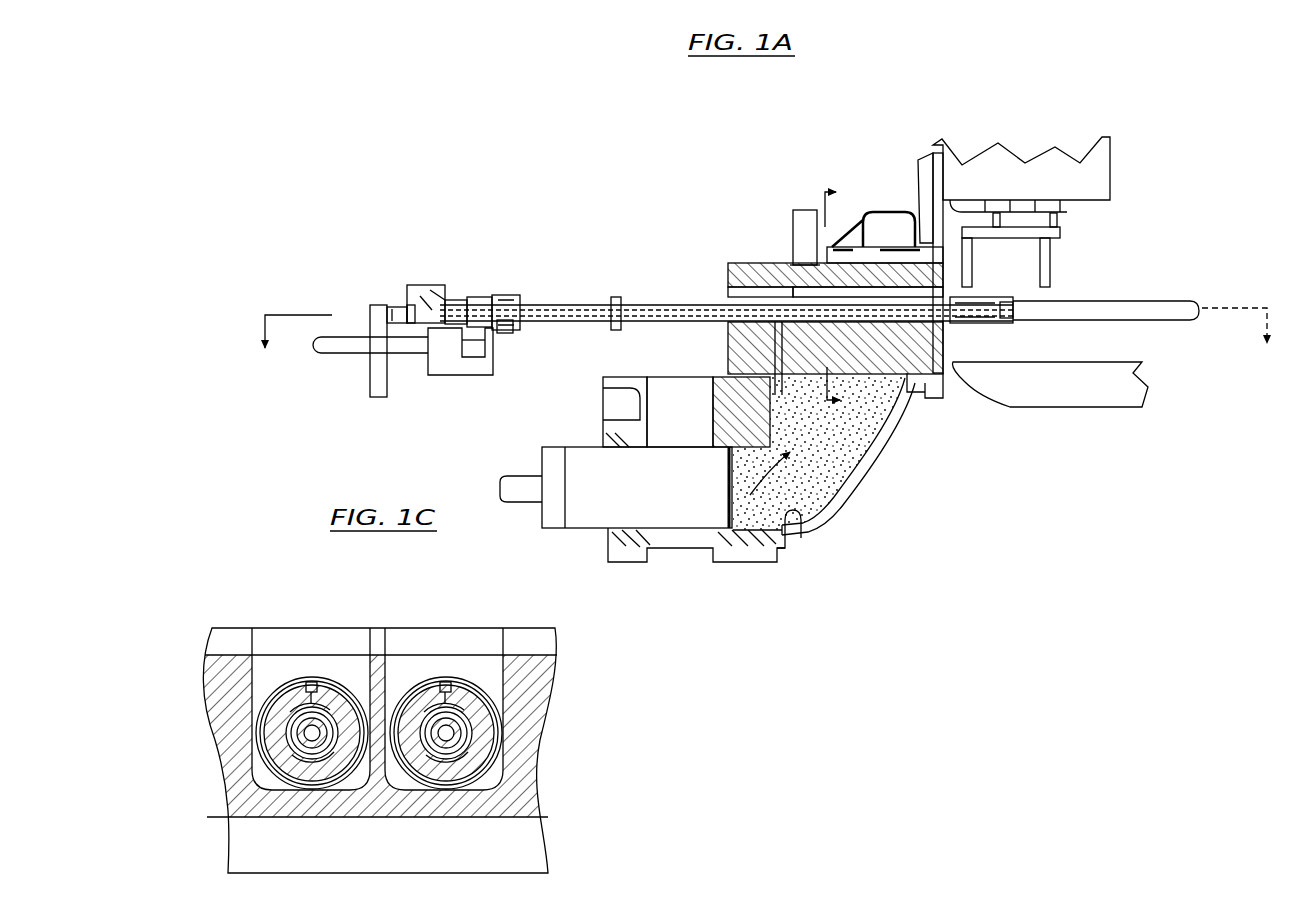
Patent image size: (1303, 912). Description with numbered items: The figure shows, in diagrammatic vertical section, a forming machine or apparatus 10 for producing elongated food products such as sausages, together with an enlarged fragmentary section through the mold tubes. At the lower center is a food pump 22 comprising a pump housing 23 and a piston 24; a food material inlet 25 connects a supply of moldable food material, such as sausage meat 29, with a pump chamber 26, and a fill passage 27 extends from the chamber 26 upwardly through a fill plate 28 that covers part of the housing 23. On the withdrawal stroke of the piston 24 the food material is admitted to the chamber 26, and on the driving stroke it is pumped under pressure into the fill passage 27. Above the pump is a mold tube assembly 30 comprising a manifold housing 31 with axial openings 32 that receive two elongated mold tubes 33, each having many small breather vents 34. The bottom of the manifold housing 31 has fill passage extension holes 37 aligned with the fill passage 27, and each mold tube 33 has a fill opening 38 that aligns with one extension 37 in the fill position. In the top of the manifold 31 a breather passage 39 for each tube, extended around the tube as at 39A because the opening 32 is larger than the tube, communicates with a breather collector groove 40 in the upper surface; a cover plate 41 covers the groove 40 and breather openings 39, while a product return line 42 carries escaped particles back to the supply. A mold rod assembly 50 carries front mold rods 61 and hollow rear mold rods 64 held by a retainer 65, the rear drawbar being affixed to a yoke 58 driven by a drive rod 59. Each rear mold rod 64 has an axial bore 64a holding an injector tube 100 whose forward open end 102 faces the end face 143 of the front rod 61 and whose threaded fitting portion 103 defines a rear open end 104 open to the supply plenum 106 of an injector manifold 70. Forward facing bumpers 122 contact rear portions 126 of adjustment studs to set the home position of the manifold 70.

In FIG. 1A, the apparatus 10 is at (868, 86).
In FIG. 1A, the food pump 22 is at (598, 553).
In FIG. 1A, the pump housing 23 is at (825, 540).
In FIG. 1A, the piston 24 is at (575, 530).
In FIG. 1A, the food material inlet 25 is at (675, 388).
In FIG. 1A, the pump chamber 26 is at (797, 530).
In FIG. 1A, the fill passage 27 is at (850, 480).
In FIG. 1A, the fill plate 28 is at (908, 390).
In FIG. 1A, the sausage meat 29 is at (748, 522).
In FIG. 1A, the mold tube assembly 30 is at (880, 250).
In FIG. 1A, the manifold housing 31 is at (930, 395).
In FIG. 1A, the axial openings 32 is at (975, 365).
In FIG. 1C, the axial openings 32 is at (305, 685).
In FIG. 1C, the mold tubes 33 is at (335, 805).
In FIG. 1C, the breather vents 34 is at (303, 683).
In FIG. 1A, the fill passage extension holes 37 is at (740, 355).
In FIG. 1A, the fill opening 38 is at (775, 290).
In FIG. 1A, the breather passage 39 is at (912, 300).
In FIG. 1C, the breather passage 39 is at (408, 640).
In FIG. 1A, the breather passage extension 39A is at (890, 430).
In FIG. 1A, the breather collector groove 40 is at (781, 270).
In FIG. 1C, the breather collector groove 40 is at (530, 637).
In FIG. 1A, the cover plate 41 is at (728, 270).
In FIG. 1A, the product return line 42 is at (783, 228).
In FIG. 1A, the mold rod assembly 50 is at (518, 338).
In FIG. 1A, the yoke 58 is at (455, 376).
In FIG. 1A, the drive rod 59 is at (357, 355).
In FIG. 1A, the front mold rods 61 is at (983, 307).
In FIG. 1C, the rear mold rods 64 is at (297, 800).
In FIG. 1C, the axial bore 64a is at (257, 720).
In FIG. 1A, the retainer 65 is at (510, 297).
In FIG. 1A, the injector manifold 70 is at (438, 290).
In FIG. 1C, the injector tube 100 is at (270, 755).
In FIG. 1A, the forward open end 102 is at (868, 300).
In FIG. 1A, the threaded fitting portion 103 is at (448, 303).
In FIG. 1A, the rear open end 104 is at (408, 323).
In FIG. 1A, the supply plenum 106 is at (425, 285).
In FIG. 1A, the forward facing bumpers 122 is at (392, 307).
In FIG. 1A, the rear portions 126 is at (403, 307).
In FIG. 1A, the end face 143 is at (888, 455).